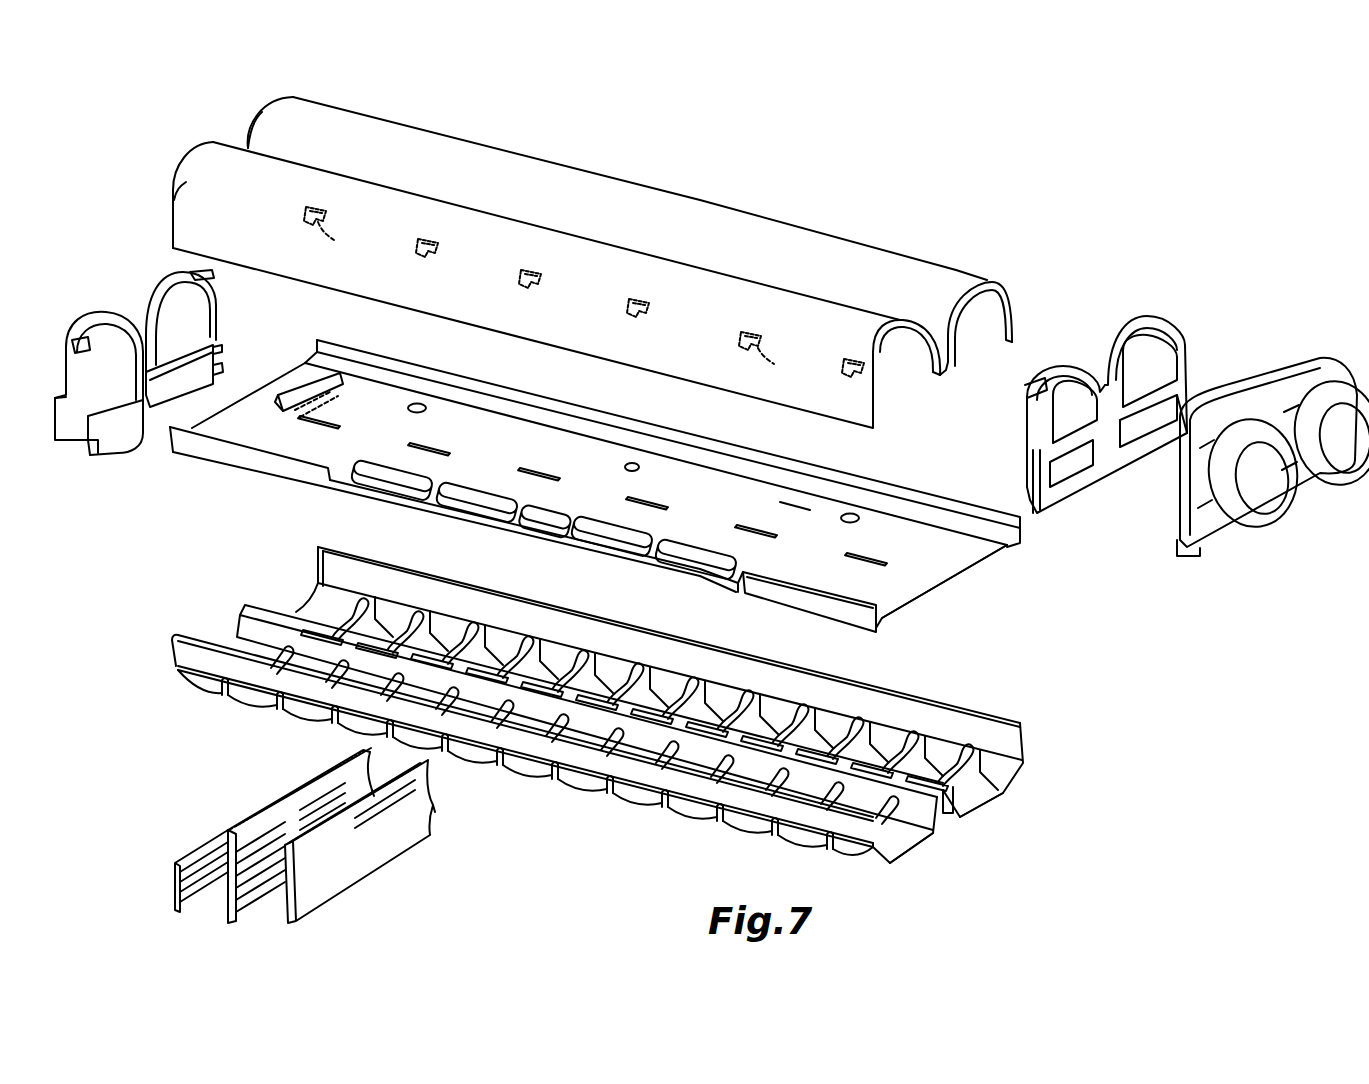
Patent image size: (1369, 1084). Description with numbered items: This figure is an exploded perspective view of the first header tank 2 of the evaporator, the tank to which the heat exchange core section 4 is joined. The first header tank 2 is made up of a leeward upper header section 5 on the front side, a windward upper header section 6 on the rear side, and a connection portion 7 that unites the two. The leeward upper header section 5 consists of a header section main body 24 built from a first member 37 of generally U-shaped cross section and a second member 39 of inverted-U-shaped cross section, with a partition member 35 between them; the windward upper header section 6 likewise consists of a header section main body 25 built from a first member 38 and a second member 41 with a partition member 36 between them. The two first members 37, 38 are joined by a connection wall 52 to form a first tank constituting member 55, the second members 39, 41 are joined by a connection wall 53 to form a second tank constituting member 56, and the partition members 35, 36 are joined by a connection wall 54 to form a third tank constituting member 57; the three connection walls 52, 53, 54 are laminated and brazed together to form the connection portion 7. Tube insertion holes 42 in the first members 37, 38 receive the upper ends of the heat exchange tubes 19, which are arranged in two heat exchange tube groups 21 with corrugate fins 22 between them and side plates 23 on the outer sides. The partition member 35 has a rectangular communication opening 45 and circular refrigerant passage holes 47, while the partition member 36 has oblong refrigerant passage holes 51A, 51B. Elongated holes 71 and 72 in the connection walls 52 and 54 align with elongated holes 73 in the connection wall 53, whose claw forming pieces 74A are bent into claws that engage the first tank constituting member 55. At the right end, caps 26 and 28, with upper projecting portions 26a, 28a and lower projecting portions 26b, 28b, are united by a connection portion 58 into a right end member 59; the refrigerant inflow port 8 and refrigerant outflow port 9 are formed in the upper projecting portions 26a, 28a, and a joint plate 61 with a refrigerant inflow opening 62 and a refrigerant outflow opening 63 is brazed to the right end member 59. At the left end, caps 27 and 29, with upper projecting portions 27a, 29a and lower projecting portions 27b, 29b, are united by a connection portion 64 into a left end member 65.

The first header tank 2 is at (1002, 178).
The heat exchange core section 4 is at (254, 834).
The leeward upper header section 5 is at (263, 124).
The windward upper header section 6 is at (186, 182).
The connection portion 7 is at (950, 360).
The refrigerant inflow port 8 is at (1155, 345).
The refrigerant outflow port 9 is at (1078, 374).
The heat exchange tube 19 is at (356, 882).
The heat exchange tube group 21 is at (328, 767).
The corrugate fin 22 is at (207, 917).
The side plate 23 is at (178, 890).
The header section main body 24 is at (558, 196).
The header section main body 25 is at (447, 207).
The cap 26 is at (1172, 382).
The upper projecting portion 26a is at (1123, 322).
The lower projecting portion 26b is at (1187, 410).
The cap 27 is at (210, 314).
The upper projecting portion 27a is at (207, 306).
The lower projecting portion 27b is at (225, 353).
The cap 28 is at (1057, 507).
The upper projecting portion 28a is at (1047, 378).
The lower projecting portion 28b is at (1078, 463).
The cap 29 is at (105, 387).
The upper projecting portion 29a is at (113, 388).
The lower projecting portion 29b is at (100, 440).
The partition member 35 is at (793, 500).
The partition member 36 is at (743, 567).
The first member 37 is at (993, 803).
The first member 38 is at (910, 853).
The second member 39 is at (282, 110).
The second member 41 is at (205, 157).
The tube insertion hole 42 is at (967, 747).
The communication opening 45 is at (323, 373).
The refrigerant passage hole 47 is at (419, 404).
The refrigerant passage hole 51A is at (553, 512).
The refrigerant passage hole 51B is at (467, 490).
The connection wall 52 is at (950, 814).
The connection wall 53 is at (940, 378).
The connection wall 54 is at (932, 575).
The first tank constituting member 55 is at (608, 711).
The second tank constituting member 56 is at (571, 239).
The third tank constituting member 57 is at (595, 469).
The connection portion 58 is at (1110, 433).
The right end member 59 is at (1144, 398).
The joint plate 61 is at (1273, 423).
The refrigerant inflow opening 62 is at (1348, 475).
The refrigerant outflow opening 63 is at (1253, 527).
The connection portion 64 is at (138, 318).
The left end member 65 is at (165, 367).
The elongated hole 71 is at (330, 595).
The elongated hole 72 is at (326, 422).
The elongated hole 73 is at (324, 207).
The claw forming piece 74A is at (334, 240).